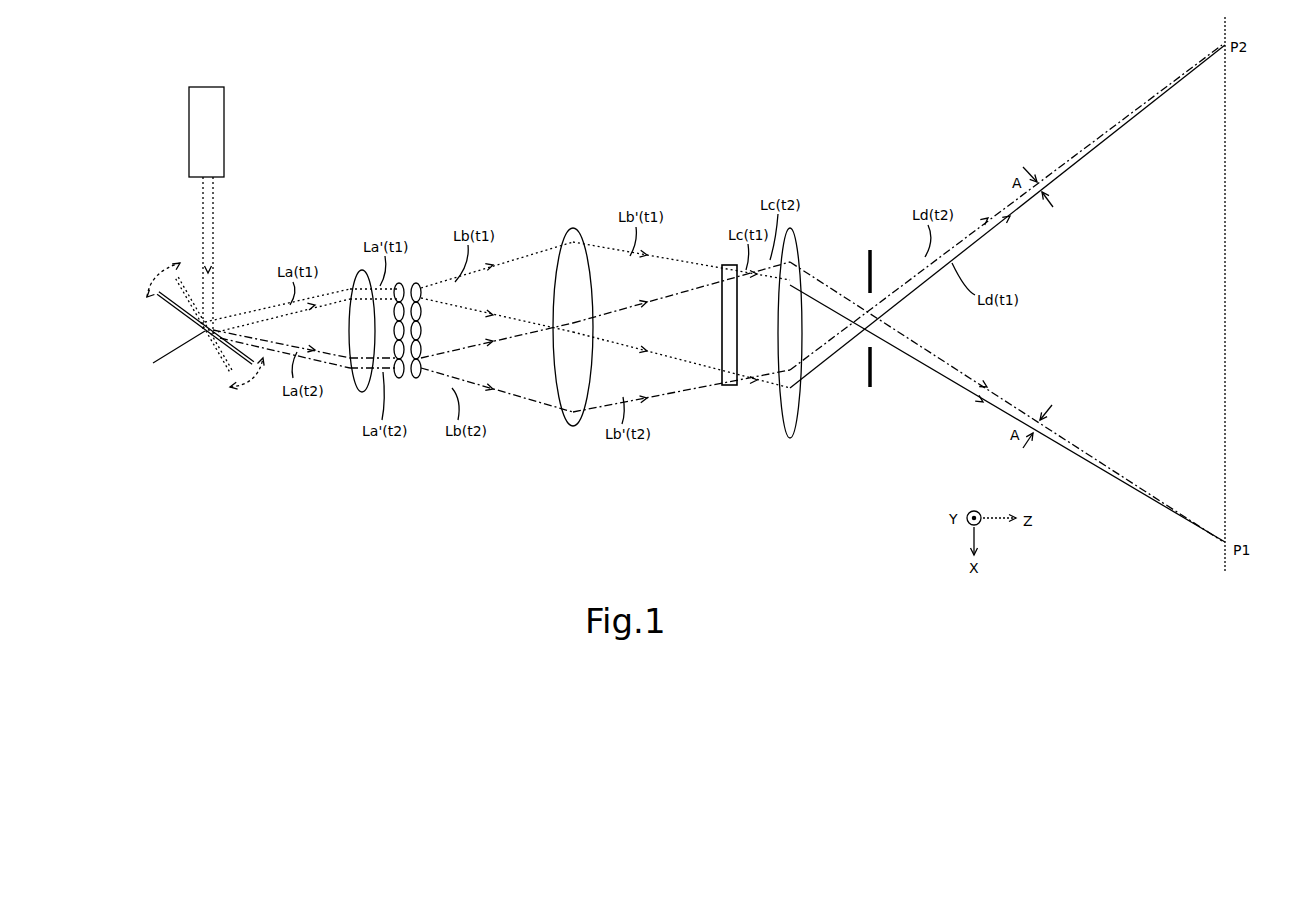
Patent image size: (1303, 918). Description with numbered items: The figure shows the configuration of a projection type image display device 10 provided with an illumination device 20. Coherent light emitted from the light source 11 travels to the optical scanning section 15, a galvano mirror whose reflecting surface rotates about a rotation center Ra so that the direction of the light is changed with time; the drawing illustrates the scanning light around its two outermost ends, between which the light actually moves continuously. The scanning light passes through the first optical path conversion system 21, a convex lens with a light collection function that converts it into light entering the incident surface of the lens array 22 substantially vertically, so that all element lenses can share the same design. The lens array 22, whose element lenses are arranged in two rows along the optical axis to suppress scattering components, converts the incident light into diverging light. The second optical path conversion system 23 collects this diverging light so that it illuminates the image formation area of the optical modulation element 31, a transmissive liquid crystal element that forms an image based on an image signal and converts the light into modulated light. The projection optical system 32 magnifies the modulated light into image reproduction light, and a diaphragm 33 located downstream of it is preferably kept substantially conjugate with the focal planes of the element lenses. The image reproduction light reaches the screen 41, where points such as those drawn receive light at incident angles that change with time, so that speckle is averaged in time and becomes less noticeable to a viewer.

The projection type image display device 10 is at (697, 97).
The light source 11 is at (224, 132).
The optical scanning section 15 is at (163, 303).
The illumination device 20 is at (517, 188).
The first optical path conversion system 21 is at (362, 392).
The lens array 22 is at (409, 380).
The second optical path conversion system 23 is at (573, 427).
The optical modulation element 31 is at (729, 386).
The projection optical system 32 is at (793, 438).
The diaphragm 33 is at (872, 388).
The screen 41 is at (1227, 363).
The rotation center Ra is at (170, 355).